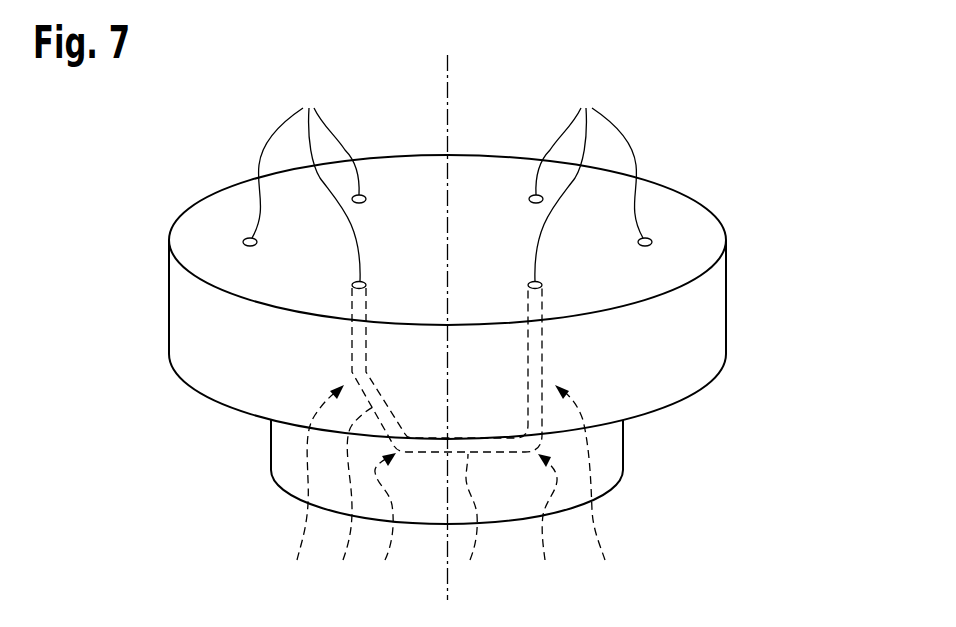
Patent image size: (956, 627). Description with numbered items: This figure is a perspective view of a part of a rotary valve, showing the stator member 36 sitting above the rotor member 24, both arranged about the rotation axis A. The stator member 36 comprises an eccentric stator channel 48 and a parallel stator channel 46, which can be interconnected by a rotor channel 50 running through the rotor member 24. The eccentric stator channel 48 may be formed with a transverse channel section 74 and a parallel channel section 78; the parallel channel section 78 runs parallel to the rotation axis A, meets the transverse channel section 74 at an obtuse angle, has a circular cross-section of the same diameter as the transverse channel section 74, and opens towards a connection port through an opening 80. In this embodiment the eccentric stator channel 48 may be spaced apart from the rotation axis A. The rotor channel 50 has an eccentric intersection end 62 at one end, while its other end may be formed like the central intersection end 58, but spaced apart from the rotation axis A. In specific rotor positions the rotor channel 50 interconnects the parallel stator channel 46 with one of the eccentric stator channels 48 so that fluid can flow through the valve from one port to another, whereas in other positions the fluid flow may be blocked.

The rotation axis A is at (449, 90).
The rotor member 24 is at (623, 438).
The stator member 36 is at (726, 284).
The parallel stator channel 46 is at (588, 490).
The eccentric stator channel 48 is at (312, 490).
The rotor channel 50 is at (470, 524).
The central extension end 58 is at (548, 524).
The eccentric extension end 62 is at (385, 524).
The transverse channel section 74 is at (350, 501).
The parallel channel section 78 is at (352, 306).
The opening 80 is at (447, 177).